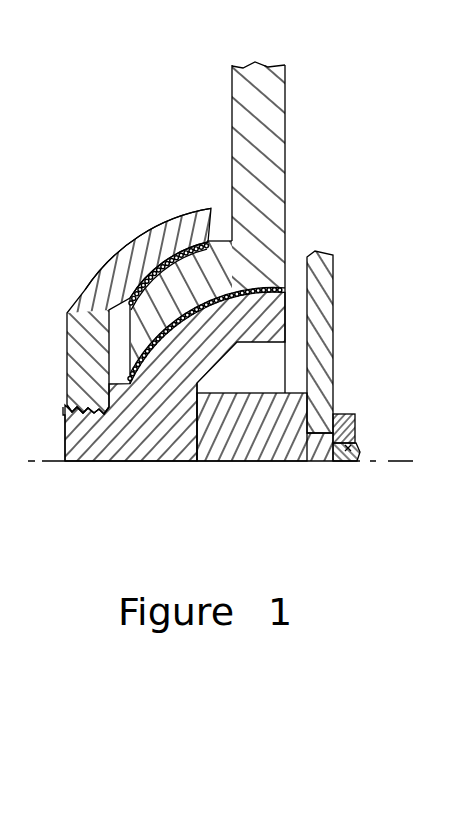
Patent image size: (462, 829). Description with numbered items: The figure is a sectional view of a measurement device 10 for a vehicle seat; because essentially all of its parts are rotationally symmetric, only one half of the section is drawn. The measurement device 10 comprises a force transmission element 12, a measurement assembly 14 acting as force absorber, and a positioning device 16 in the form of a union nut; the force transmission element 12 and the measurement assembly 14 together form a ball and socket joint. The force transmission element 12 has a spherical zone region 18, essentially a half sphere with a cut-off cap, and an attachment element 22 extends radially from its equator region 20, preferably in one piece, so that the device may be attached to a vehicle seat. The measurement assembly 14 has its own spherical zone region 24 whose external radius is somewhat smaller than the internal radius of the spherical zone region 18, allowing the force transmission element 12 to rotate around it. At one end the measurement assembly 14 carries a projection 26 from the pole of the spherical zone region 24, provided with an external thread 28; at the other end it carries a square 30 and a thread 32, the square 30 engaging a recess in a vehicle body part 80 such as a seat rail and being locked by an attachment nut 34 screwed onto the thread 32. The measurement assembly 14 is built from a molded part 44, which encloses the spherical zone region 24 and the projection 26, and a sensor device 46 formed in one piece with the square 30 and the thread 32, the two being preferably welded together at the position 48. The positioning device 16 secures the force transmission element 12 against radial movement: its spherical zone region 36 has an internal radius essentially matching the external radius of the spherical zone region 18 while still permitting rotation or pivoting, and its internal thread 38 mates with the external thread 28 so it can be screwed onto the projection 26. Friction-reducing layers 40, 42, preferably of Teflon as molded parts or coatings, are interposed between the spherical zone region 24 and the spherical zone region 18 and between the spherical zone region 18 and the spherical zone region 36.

The measurement device 10 is at (349, 210).
The force transmission element 12 is at (301, 160).
The measurement assembly 14 is at (155, 480).
The positioning device 16 is at (92, 290).
The spherical zone region 18 is at (219, 262).
The equator region 20 is at (278, 272).
The attachment element 22 is at (278, 96).
The spherical zone region 24 is at (278, 320).
The projection 26 is at (79, 443).
The external thread 28 is at (65, 424).
The square 30 is at (322, 443).
The thread 32 is at (362, 454).
The attachment nut 34 is at (347, 422).
The spherical zone region 36 is at (130, 252).
The internal thread 38 is at (83, 408).
The friction-reducing layer 40 is at (172, 233).
The friction-reducing layer 42 is at (133, 258).
The molded part 44 is at (130, 433).
The sensor device 46 is at (245, 450).
The weld position 48 is at (188, 452).
The vehicle body part 80 is at (328, 289).